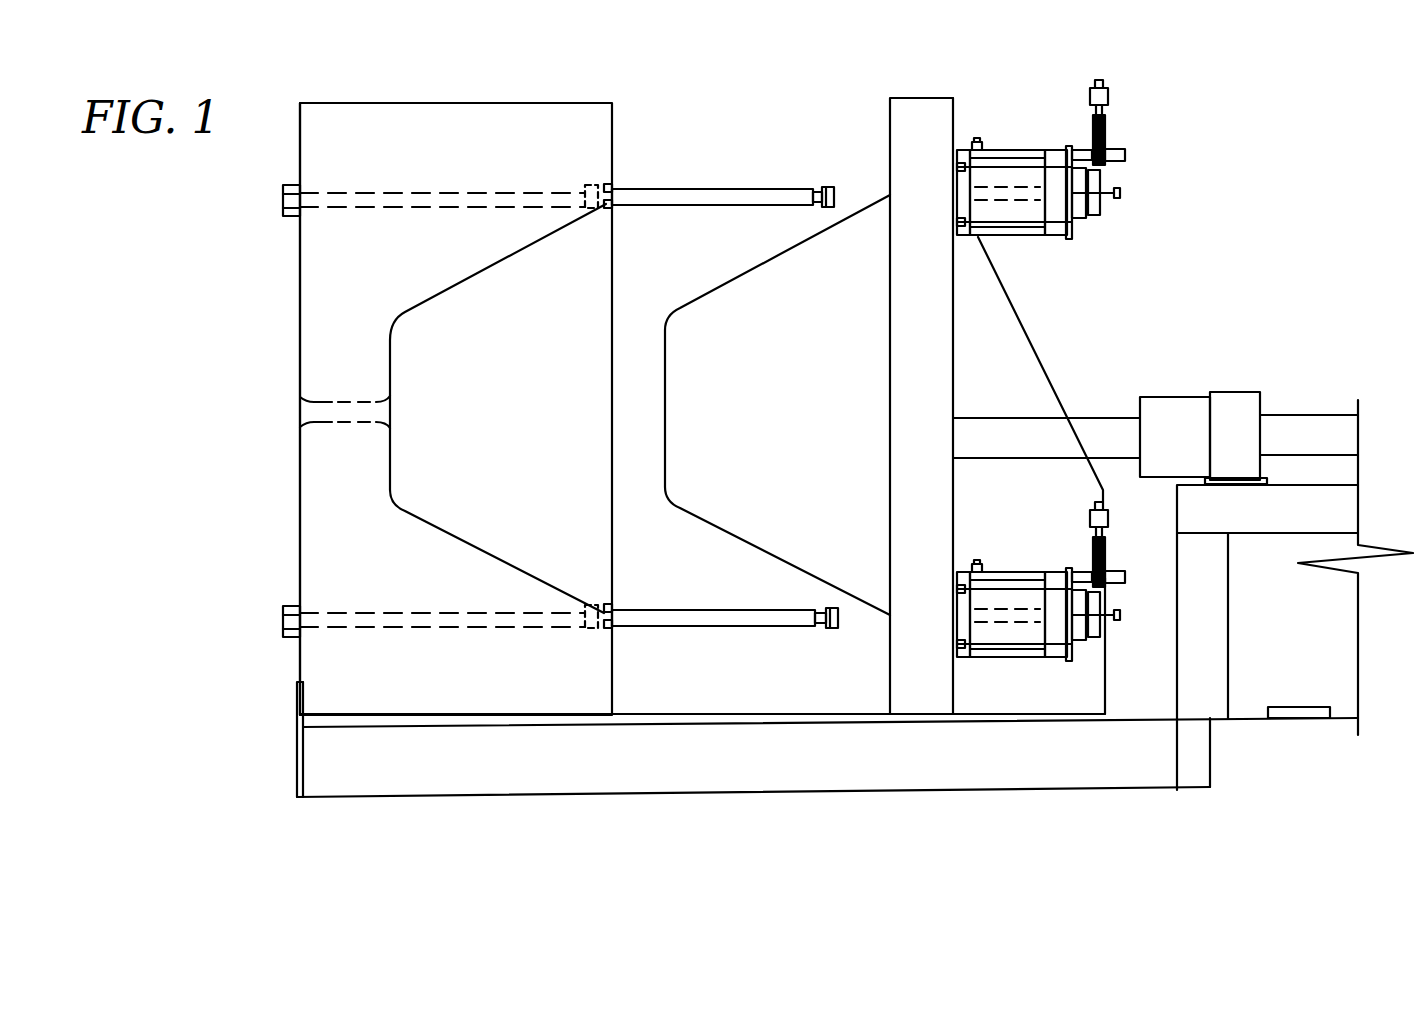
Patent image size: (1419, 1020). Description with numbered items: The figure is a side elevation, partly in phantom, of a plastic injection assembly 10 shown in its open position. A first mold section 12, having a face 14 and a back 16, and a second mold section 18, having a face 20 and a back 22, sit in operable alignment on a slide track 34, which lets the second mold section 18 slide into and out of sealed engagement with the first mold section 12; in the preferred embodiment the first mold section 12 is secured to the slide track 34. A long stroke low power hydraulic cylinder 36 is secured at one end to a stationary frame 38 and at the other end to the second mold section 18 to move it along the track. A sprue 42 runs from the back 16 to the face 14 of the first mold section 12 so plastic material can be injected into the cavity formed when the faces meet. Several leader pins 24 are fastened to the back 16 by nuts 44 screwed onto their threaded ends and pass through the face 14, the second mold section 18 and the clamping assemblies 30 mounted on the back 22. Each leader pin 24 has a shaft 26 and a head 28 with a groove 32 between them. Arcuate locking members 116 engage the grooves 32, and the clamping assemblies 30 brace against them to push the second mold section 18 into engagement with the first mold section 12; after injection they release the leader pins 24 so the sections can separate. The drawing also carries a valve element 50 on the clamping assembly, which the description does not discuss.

The plastic injection assembly 10 is at (732, 76).
The first mold section 12 is at (438, 128).
The face 14 is at (393, 357).
The back 16 is at (298, 273).
The second mold section 18 is at (921, 127).
The face 20 is at (663, 383).
The back 22 is at (957, 316).
The leader pins 24 is at (620, 216).
The shaft 26 is at (678, 197).
The head 28 is at (835, 186).
The clamping assemblies 30 is at (1163, 211).
The groove 32 is at (821, 176).
The slide track 34 is at (697, 775).
The long stroke low power hydraulic cylinder 36 is at (1183, 418).
The stationary frame 38 is at (1208, 658).
The sprue 42 is at (303, 408).
The nuts 44 is at (280, 191).
The valve 50 is at (1158, 112).
The arcuate locking members 116 is at (1096, 215).